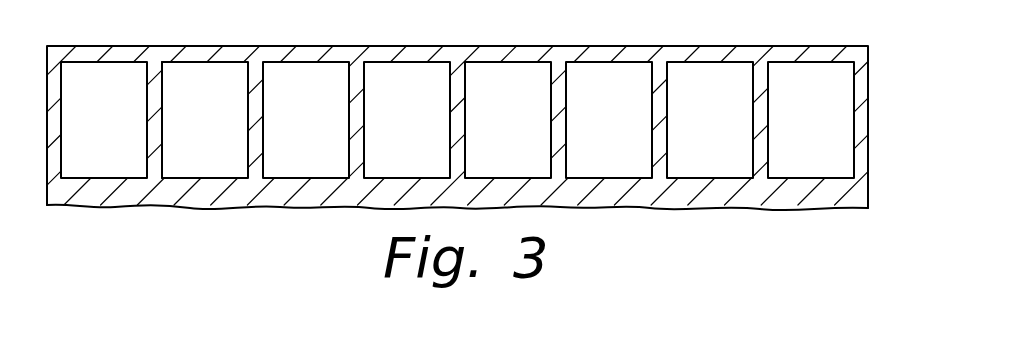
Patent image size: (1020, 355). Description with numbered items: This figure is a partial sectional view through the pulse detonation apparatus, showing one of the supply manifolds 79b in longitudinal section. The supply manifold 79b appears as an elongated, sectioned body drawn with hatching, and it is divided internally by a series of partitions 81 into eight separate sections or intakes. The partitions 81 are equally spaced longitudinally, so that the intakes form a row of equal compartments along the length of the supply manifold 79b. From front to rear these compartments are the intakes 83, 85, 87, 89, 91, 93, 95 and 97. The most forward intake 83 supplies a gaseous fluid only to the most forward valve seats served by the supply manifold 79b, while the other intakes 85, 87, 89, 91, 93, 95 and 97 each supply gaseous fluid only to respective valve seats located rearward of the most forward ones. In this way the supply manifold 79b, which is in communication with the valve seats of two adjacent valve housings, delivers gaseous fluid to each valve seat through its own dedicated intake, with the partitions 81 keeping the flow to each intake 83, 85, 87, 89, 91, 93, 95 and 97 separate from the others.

The supply manifold 79b is at (787, 47).
The partition 81 is at (165, 88).
The most forward intake 83 is at (88, 136).
The intake 85 is at (189, 136).
The intake 87 is at (290, 136).
The intake 89 is at (391, 136).
The intake 91 is at (492, 136).
The intake 93 is at (593, 136).
The intake 95 is at (694, 136).
The intake 97 is at (795, 136).